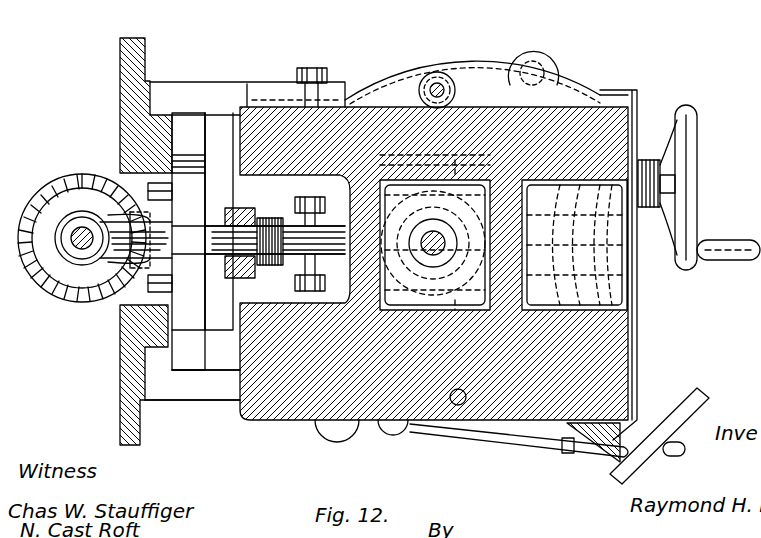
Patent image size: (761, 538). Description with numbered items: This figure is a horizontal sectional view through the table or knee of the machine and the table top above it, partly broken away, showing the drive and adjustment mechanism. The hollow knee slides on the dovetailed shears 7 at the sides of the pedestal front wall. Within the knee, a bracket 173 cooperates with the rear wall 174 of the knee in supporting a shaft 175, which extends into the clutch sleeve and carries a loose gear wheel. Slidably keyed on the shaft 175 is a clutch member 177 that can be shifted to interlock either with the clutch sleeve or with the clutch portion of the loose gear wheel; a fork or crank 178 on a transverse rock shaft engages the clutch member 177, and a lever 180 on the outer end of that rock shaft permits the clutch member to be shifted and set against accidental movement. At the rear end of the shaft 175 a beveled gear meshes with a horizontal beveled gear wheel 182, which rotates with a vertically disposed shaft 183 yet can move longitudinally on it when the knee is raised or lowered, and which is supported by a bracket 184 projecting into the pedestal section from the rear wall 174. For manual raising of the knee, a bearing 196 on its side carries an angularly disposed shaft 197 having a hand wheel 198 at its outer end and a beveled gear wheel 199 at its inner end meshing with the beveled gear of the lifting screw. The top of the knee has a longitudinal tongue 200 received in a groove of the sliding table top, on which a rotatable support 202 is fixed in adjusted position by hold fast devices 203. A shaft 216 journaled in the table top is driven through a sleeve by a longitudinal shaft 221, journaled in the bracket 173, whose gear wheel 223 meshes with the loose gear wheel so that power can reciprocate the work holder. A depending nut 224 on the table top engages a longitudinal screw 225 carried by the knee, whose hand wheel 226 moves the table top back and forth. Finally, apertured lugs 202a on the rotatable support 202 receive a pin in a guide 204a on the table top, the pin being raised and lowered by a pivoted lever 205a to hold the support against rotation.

The shears 7 is at (150, 128).
The shaft 175 is at (214, 330).
The gear wheel 223 is at (272, 215).
The clutch member 177 is at (293, 195).
The longitudinal shaft 221 is at (337, 235).
The rotatable support 202 is at (357, 105).
The hold fast devices 203 is at (437, 90).
The apertured lugs 202a is at (532, 73).
The shaft 216 is at (433, 243).
The depending nut 224 is at (453, 170).
The hand wheel 226 is at (695, 142).
The horizontal beveled gear wheel 182 is at (52, 180).
The vertically disposed shaft 183 is at (78, 243).
The bracket 184 is at (118, 253).
The rear wall 174 is at (190, 241).
The bracket 173 is at (238, 270).
The longitudinal tongue 200 is at (208, 372).
The fork or crank 178 is at (300, 292).
The guide 204a is at (328, 441).
The pivoted lever 205a is at (393, 436).
The lever 180 is at (505, 440).
The bearing 196 is at (578, 456).
The angularly disposed shaft 197 is at (637, 370).
The hand wheel 198 is at (700, 396).
The beveled gear wheel 199 is at (433, 245).
The longitudinal screw 225 is at (536, 194).